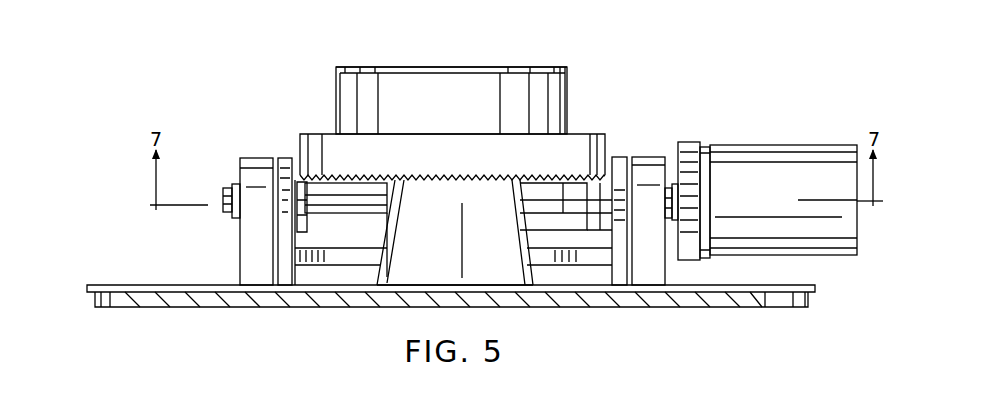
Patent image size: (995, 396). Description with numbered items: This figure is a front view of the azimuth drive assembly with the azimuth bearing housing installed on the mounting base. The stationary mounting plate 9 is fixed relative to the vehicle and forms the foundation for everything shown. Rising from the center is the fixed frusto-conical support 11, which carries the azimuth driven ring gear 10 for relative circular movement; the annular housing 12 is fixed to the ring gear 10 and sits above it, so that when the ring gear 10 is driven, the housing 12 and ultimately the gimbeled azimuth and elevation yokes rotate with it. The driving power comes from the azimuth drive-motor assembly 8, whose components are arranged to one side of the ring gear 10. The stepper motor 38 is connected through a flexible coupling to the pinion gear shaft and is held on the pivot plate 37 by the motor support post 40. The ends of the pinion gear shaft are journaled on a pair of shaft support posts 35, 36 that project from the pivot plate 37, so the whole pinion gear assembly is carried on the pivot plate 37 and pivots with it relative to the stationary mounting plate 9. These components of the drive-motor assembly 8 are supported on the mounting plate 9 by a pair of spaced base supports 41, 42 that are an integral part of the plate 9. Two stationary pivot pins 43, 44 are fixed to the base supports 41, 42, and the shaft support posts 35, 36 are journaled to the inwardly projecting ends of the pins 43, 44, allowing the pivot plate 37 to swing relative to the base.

The azimuth drive-motor assembly 8 is at (453, 60).
The mounting plate 9 is at (178, 293).
The azimuth driven ring gear 10 is at (568, 152).
The frusto-conical support 11 is at (433, 213).
The annular housing 12 is at (553, 88).
The shaft support post 35 is at (284, 162).
The shaft support post 36 is at (620, 160).
The pivot plate 37 is at (342, 255).
The stepper motor 38 is at (798, 165).
The motor support post 40 is at (690, 148).
The base support 41 is at (259, 165).
The base support 42 is at (655, 165).
The stationary pivot pin 43 is at (226, 195).
The stationary pivot pin 44 is at (682, 200).